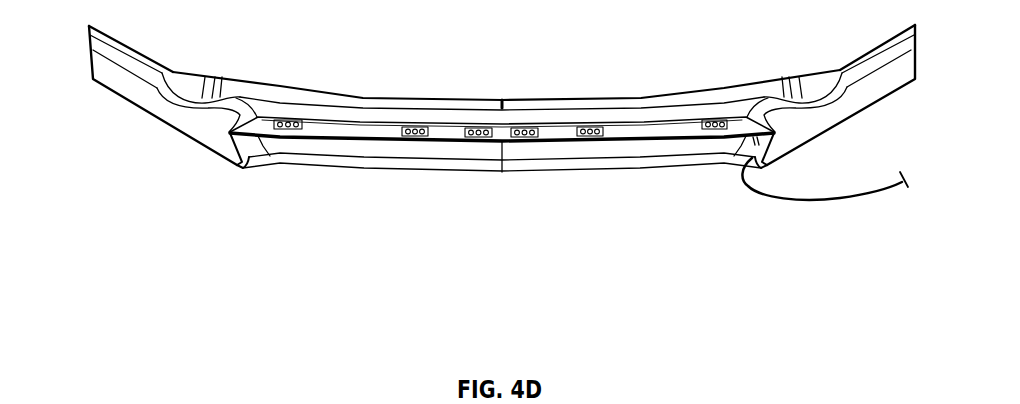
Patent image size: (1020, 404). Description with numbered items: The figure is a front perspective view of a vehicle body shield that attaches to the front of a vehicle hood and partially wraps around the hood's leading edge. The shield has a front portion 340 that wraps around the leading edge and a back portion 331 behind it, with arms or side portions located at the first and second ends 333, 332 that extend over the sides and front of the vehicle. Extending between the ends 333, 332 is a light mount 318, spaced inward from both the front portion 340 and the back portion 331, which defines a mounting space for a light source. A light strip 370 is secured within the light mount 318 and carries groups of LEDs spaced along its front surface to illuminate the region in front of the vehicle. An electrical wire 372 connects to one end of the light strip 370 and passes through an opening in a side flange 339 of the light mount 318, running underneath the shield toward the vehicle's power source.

The light mount 318 is at (317, 108).
The back portion 331 is at (247, 90).
The second end 332 is at (918, 43).
The first end 333 is at (86, 57).
The side flange 339 is at (293, 134).
The front portion 340 is at (456, 168).
The light strip 370 is at (553, 132).
The electrical wire 372 is at (800, 202).